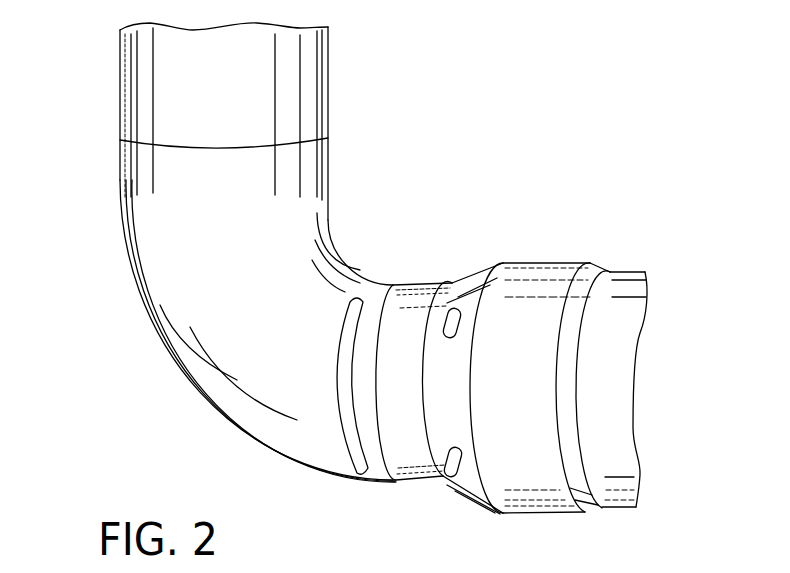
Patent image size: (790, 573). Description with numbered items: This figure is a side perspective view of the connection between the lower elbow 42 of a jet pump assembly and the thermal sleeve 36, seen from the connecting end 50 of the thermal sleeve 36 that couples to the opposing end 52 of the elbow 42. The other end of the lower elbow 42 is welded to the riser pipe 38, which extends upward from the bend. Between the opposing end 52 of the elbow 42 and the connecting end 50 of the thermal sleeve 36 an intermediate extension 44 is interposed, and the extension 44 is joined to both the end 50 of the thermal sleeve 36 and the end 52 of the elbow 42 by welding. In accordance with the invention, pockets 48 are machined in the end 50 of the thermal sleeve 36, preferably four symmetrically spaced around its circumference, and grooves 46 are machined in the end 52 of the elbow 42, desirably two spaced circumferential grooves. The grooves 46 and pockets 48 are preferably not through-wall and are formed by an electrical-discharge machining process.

The thermal sleeve 36 is at (553, 277).
The riser pipe 38 is at (328, 97).
The lower elbow 42 is at (332, 230).
The intermediate extension 44 is at (425, 285).
The grooves 46 is at (343, 447).
The pockets 48 is at (460, 317).
The end of the thermal sleeve 50 is at (472, 497).
The opposing end of the elbow 52 is at (370, 272).